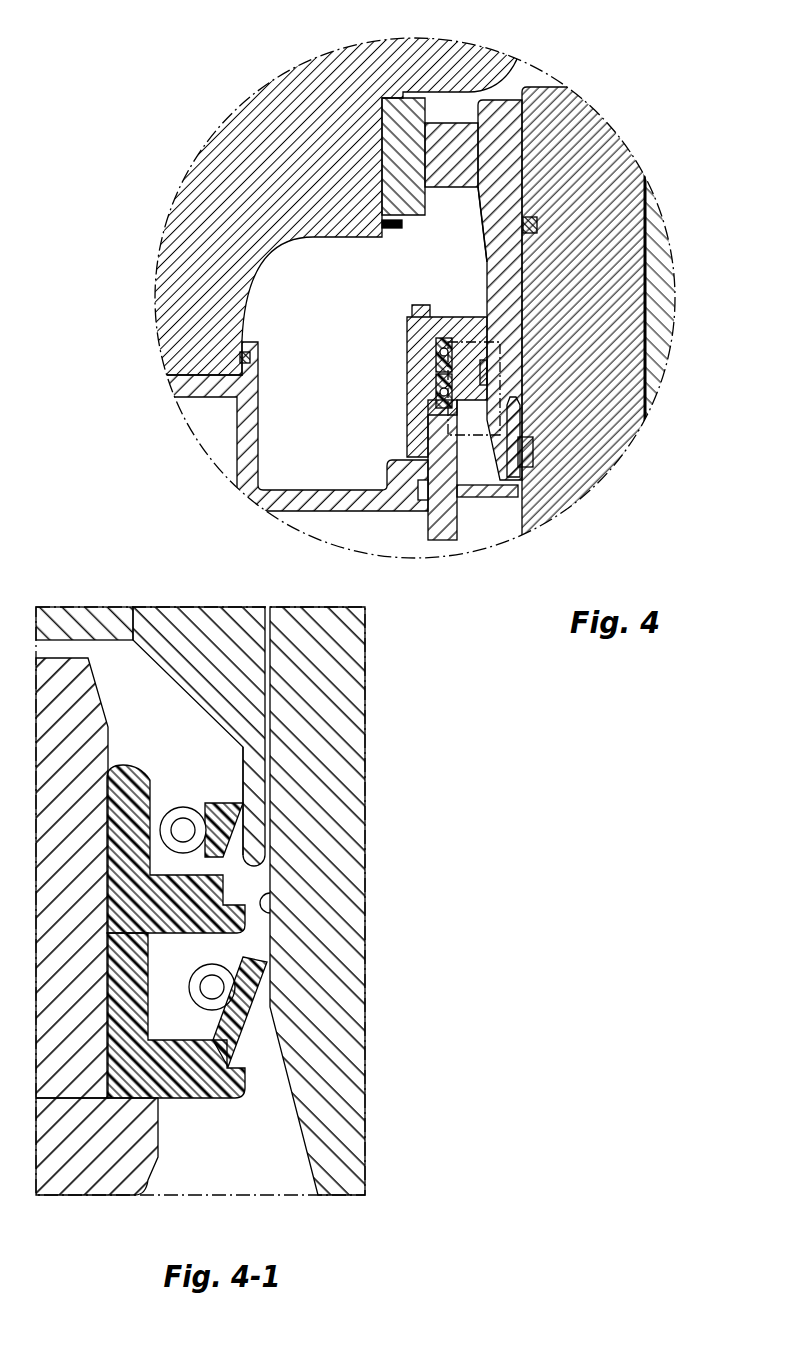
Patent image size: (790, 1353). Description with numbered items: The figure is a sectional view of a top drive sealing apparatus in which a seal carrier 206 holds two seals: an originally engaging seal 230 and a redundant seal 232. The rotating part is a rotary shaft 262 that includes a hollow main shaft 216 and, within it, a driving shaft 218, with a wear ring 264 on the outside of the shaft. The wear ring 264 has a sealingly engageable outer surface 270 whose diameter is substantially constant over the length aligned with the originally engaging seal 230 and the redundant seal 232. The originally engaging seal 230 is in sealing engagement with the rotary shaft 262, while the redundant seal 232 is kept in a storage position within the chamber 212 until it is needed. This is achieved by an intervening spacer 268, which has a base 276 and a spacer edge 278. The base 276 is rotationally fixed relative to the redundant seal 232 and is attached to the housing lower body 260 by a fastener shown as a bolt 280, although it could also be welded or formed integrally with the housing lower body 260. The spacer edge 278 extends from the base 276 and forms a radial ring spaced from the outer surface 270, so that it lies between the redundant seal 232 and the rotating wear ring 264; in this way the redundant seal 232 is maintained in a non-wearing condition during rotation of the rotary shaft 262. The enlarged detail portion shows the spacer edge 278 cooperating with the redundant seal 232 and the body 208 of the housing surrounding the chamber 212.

In FIG. 4, the seal carrier 206 is at (462, 528).
In FIG. 4-1, the seal carrier 206 is at (150, 1180).
In FIG. 4, the body 208 is at (168, 253).
In FIG. 4, the chamber 212 is at (323, 279).
In FIG. 4-1, the chamber 212 is at (142, 722).
In FIG. 4, the main shaft 216 is at (577, 97).
In FIG. 4, the driving shaft 218 is at (668, 270).
In FIG. 4, the originally engaging seal 230 is at (492, 402).
In FIG. 4-1, the originally engaging seal 230 is at (245, 1035).
In FIG. 4, the redundant seal 232 is at (420, 395).
In FIG. 4-1, the redundant seal 232 is at (187, 805).
In FIG. 4, the housing lower body 260 is at (300, 512).
In FIG. 4, the rotary shaft 262 is at (585, 501).
In FIG. 4, the wear ring 264 is at (512, 100).
In FIG. 4-1, the wear ring 264 is at (355, 808).
In FIG. 4, the intervening spacer 268 is at (443, 314).
In FIG. 4-1, the intervening spacer 268 is at (183, 605).
In FIG. 4, the outer surface 270 is at (481, 258).
In FIG. 4-1, the outer surface 270 is at (275, 893).
In FIG. 4-1, the base 276 is at (65, 612).
In FIG. 4, the spacer edge 278 is at (463, 358).
In FIG. 4-1, the spacer edge 278 is at (258, 808).
In FIG. 4, the bolt 280 is at (412, 302).